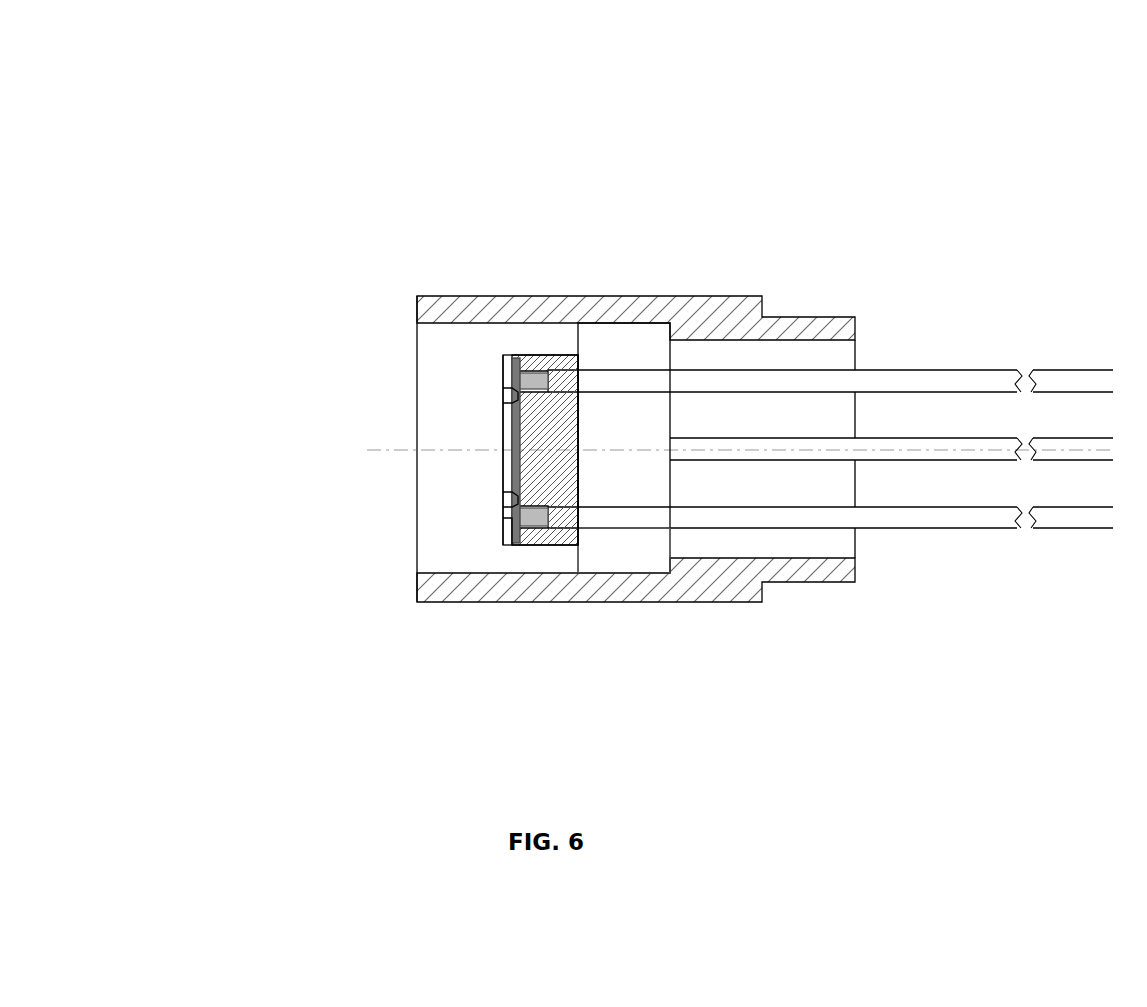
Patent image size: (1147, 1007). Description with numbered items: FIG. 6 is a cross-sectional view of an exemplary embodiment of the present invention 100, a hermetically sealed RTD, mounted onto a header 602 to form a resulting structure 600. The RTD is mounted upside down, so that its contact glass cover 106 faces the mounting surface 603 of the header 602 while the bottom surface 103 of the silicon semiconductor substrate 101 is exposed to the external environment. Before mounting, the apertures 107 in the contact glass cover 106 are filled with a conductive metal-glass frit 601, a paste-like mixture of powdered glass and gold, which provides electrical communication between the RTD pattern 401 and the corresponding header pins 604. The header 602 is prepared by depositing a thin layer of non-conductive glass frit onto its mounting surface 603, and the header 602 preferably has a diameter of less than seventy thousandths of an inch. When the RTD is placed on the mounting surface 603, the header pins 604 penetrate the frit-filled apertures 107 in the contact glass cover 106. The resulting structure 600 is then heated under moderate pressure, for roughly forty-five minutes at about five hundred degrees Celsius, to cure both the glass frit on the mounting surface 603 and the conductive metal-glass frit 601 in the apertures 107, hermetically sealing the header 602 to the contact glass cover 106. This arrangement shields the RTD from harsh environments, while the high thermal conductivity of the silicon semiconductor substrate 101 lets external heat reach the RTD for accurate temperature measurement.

The resulting structure 600 is at (250, 158).
The present invention 100 is at (505, 450).
The silicon semiconductor substrate 101 is at (518, 480).
The bottom surface 103 is at (503, 473).
The contact glass cover 106 is at (555, 410).
The apertures 107 is at (560, 378).
The RTD pattern 401 is at (510, 527).
The conductive metal-glass frit 601 is at (556, 513).
The header 602 is at (617, 325).
The mounting surface 603 is at (578, 463).
The header pins 604 is at (592, 523).